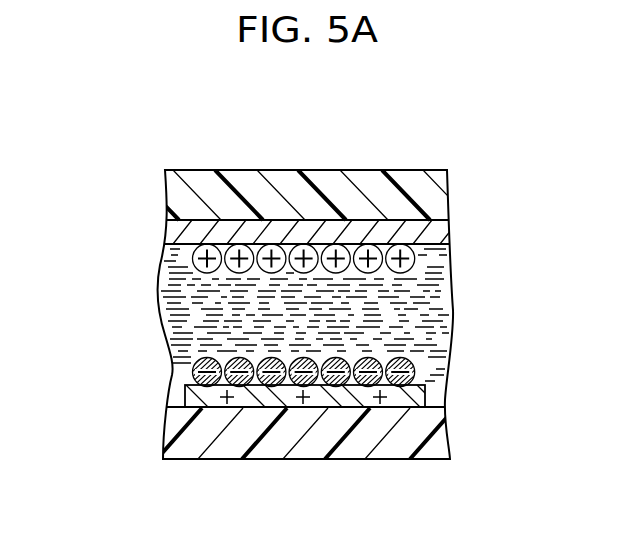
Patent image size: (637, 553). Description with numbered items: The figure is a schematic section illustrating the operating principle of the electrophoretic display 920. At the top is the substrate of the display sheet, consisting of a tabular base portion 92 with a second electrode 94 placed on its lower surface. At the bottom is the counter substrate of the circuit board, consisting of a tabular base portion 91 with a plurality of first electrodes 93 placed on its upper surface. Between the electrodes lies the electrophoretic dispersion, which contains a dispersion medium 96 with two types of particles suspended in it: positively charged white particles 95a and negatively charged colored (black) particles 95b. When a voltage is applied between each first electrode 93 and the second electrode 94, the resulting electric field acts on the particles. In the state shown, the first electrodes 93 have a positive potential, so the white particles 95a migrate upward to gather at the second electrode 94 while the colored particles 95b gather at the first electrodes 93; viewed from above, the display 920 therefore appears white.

The electrophoretic display 920 is at (343, 118).
The tabular base portion 92 is at (405, 205).
The second electrode 94 is at (239, 232).
The white particles 95a is at (196, 251).
The dispersion medium 96 is at (168, 321).
The colored particles 95b is at (194, 362).
The first electrodes 93 is at (260, 400).
The tabular base portion 91 is at (398, 440).